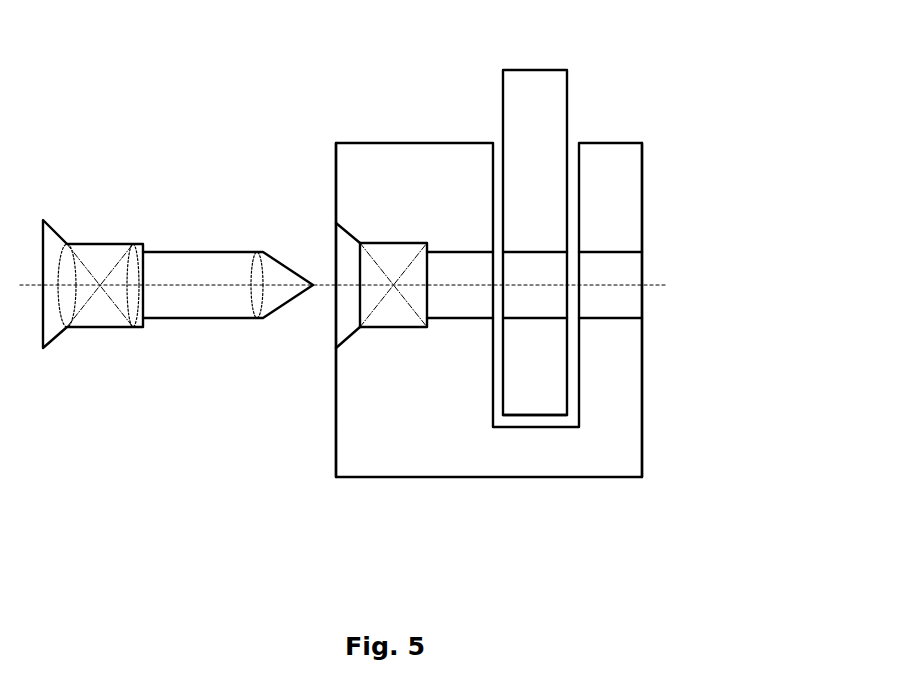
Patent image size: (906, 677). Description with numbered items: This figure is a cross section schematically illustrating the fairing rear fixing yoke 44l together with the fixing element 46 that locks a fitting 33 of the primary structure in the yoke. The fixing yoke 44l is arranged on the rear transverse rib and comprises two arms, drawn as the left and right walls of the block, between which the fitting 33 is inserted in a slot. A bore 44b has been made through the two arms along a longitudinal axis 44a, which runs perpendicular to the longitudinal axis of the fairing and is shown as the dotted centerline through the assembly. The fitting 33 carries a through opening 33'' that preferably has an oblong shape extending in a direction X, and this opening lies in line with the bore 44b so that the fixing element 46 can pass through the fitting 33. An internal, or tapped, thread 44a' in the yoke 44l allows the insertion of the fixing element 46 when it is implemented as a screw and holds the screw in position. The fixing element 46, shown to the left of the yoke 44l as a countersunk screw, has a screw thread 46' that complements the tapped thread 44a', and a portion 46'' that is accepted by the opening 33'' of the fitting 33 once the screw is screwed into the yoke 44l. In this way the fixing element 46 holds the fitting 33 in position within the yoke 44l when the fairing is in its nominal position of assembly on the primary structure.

The fitting 33 is at (580, 216).
The through opening 33'' is at (492, 360).
The longitudinal axis 44a is at (569, 310).
The internal thread 44a' is at (351, 387).
The bore 44b is at (463, 262).
The fixing yoke 44l is at (484, 305).
The fixing element 46 is at (176, 274).
The screw thread 46' is at (91, 240).
The portion of the screw 46'' is at (214, 334).